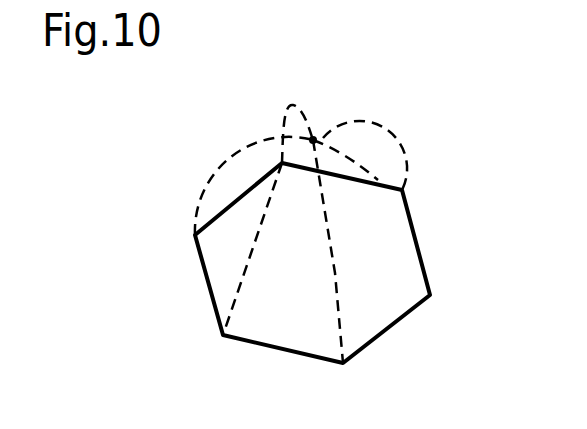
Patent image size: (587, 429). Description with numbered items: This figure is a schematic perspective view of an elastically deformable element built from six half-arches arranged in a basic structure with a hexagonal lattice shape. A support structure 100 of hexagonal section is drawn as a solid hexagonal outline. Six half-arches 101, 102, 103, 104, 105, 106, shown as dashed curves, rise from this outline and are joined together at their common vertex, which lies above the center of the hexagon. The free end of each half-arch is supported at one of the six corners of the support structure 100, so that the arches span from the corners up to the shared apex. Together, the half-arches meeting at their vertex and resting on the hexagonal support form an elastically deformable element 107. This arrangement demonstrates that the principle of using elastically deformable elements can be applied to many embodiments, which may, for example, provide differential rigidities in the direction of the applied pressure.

The support structure 100 is at (402, 322).
The half-arch 101 is at (240, 248).
The half-arch 102 is at (216, 168).
The half-arch 103 is at (286, 104).
The half-arch 104 is at (380, 128).
The half-arch 105 is at (380, 175).
The half-arch 106 is at (335, 273).
The elastically deformable element 107 is at (317, 120).